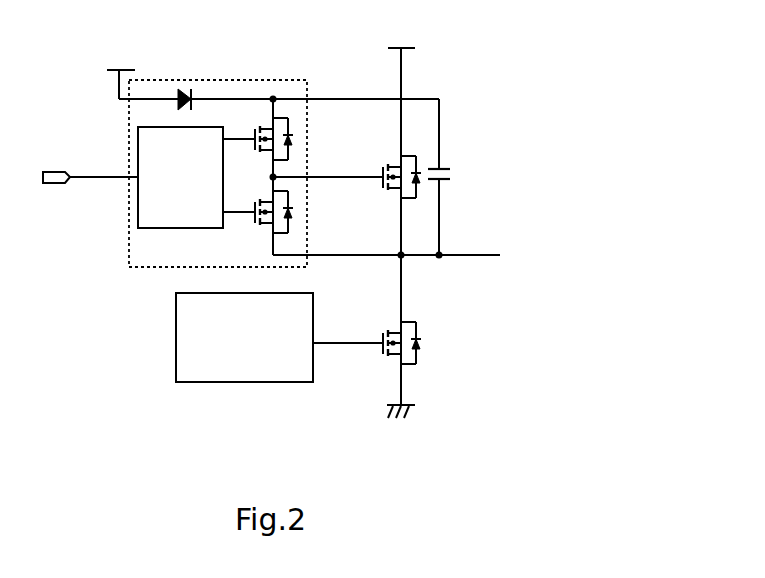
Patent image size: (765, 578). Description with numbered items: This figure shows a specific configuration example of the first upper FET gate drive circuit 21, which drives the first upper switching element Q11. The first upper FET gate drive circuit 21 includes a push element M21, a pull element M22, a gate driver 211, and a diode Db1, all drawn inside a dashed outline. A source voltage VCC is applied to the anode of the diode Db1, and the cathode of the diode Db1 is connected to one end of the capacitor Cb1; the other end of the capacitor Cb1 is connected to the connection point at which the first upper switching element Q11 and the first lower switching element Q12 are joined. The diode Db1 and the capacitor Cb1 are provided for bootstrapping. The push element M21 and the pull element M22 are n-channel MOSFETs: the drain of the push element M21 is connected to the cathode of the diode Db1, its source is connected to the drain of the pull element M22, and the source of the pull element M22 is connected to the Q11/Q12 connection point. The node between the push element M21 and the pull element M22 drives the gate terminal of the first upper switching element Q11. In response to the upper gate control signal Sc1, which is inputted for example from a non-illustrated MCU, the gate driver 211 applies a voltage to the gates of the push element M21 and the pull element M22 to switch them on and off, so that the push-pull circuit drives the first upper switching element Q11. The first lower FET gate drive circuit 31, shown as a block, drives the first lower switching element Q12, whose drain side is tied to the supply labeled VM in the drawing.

The first upper FET gate drive circuit 21 is at (299, 80).
The gate driver 211 is at (208, 228).
The first lower FET gate drive circuit 31 is at (176, 300).
The diode Db1 is at (183, 93).
The push element M21 is at (251, 128).
The pull element M22 is at (251, 204).
The first upper switching element Q11 is at (386, 160).
The first lower switching element Q12 is at (387, 328).
The capacitor Cb1 is at (453, 176).
The upper gate control signal Sc1 is at (90, 169).
The source voltage VCC is at (121, 74).
The motor supply voltage VM is at (401, 217).